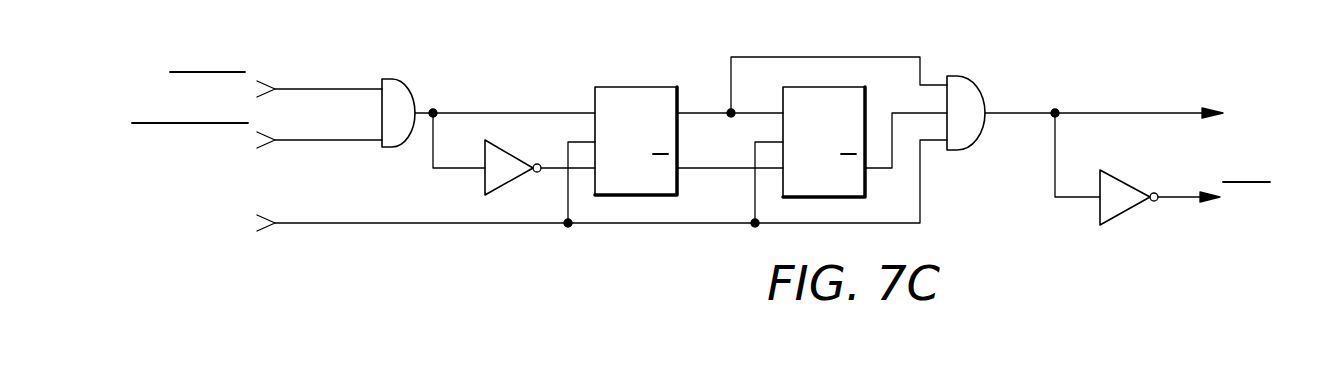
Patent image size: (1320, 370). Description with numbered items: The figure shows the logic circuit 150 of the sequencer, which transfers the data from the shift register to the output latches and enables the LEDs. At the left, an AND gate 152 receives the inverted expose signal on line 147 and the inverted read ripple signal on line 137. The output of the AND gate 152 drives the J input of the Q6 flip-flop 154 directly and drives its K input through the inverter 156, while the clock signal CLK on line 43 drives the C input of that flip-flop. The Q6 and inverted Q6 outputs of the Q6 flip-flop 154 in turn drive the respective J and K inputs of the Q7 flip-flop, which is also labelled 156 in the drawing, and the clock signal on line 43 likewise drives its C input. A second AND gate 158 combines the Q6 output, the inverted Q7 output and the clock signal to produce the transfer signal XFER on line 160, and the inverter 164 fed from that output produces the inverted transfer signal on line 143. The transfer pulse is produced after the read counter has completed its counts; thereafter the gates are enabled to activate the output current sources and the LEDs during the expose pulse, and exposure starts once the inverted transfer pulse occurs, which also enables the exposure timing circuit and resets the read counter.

The logic circuit 150 is at (1212, 28).
The line 147 is at (333, 88).
The line 137 is at (320, 142).
The line 43 is at (387, 225).
The AND gate 152 is at (410, 85).
The inverter 156 is at (510, 180).
The Q6 flip-flop 154 is at (668, 87).
The AND gate 158 is at (975, 85).
The line 160 is at (1113, 113).
The line 143 is at (1173, 197).
The inverter 164 is at (1132, 207).